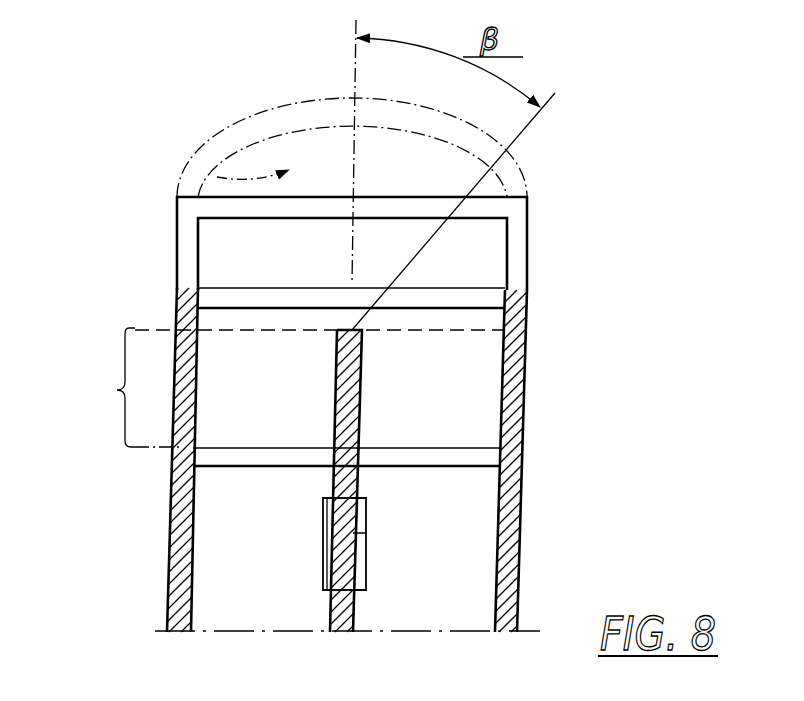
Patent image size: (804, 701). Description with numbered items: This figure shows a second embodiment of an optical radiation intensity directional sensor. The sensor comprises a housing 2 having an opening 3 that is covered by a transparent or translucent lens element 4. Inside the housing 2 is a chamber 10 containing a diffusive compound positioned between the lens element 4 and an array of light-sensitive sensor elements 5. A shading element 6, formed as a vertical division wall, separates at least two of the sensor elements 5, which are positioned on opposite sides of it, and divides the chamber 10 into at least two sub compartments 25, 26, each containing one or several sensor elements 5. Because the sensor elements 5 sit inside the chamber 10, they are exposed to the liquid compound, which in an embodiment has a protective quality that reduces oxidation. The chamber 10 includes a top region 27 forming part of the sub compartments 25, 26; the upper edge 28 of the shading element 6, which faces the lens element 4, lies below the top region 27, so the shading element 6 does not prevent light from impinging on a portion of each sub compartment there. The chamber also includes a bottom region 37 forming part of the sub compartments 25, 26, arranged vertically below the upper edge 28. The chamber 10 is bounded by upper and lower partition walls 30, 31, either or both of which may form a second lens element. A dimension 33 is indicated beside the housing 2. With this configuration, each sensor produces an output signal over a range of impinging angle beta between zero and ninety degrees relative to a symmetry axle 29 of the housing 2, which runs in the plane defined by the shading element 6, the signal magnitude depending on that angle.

The housing 2 is at (510, 313).
The opening 3 is at (208, 176).
The lens element 4 is at (503, 212).
The sensor elements 5 is at (325, 558).
The shading element 6 is at (363, 400).
The chamber 10 is at (253, 412).
The sub compartment 25 is at (248, 347).
The sub compartment 26 is at (462, 405).
The top region 27 is at (245, 318).
The upper edge 28 is at (348, 330).
The symmetry axle 29 is at (355, 77).
The upper partition wall 30 is at (482, 292).
The lower partition wall 31 is at (458, 458).
The chamber height 33 is at (113, 391).
The bottom region 37 is at (478, 493).